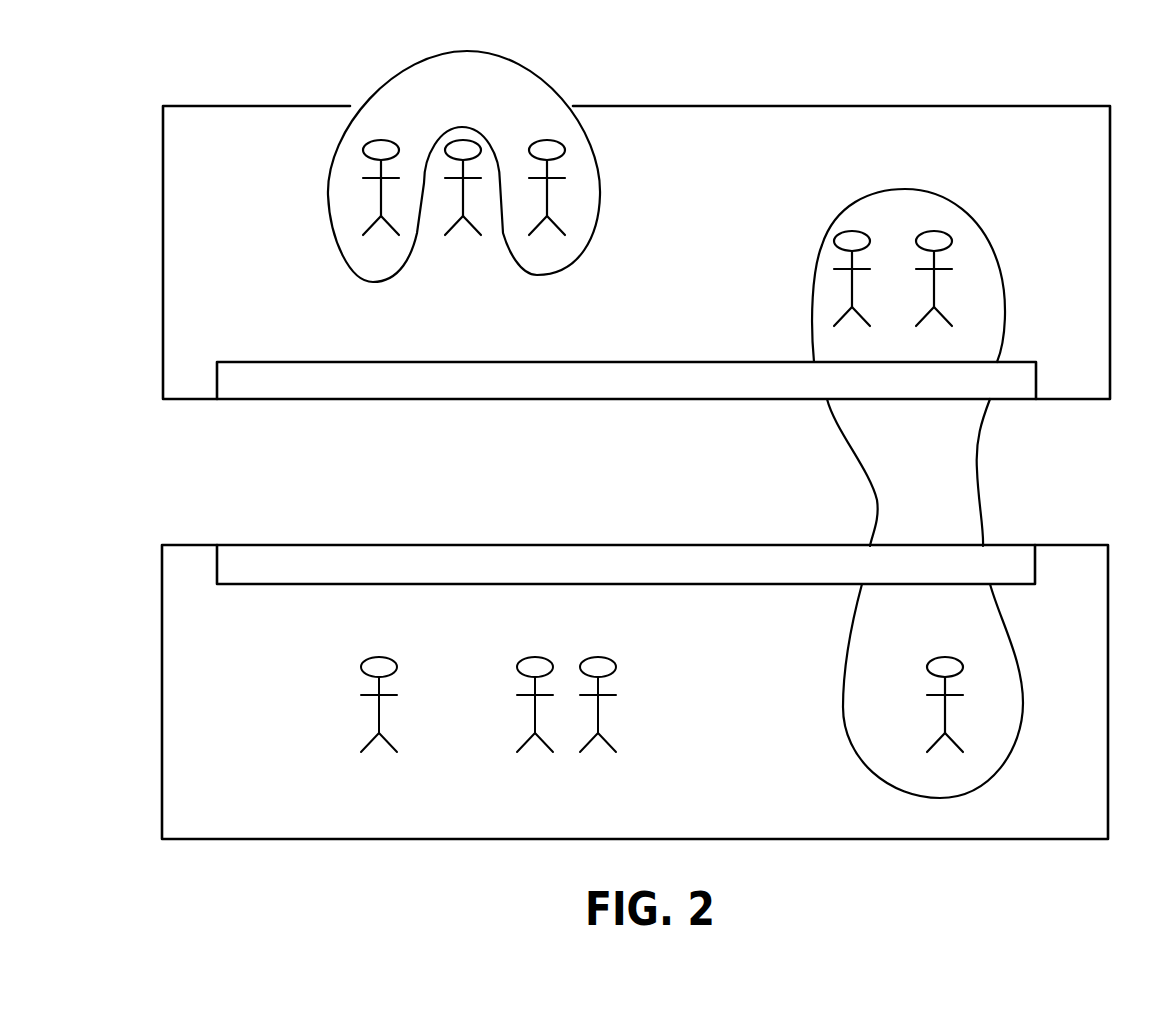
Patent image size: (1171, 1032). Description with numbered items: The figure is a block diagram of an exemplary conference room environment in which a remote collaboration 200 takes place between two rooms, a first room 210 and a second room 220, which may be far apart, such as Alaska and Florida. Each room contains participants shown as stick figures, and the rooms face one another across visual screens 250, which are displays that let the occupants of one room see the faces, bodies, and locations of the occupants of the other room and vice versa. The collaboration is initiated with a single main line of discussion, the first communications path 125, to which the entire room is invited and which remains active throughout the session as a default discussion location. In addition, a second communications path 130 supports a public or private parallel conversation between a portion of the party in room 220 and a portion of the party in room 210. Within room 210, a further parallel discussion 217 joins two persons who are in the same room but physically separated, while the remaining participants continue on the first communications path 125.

The remote collaboration 200 is at (634, 36).
The room 210 is at (205, 160).
The room 220 is at (203, 804).
The parallel discussion 217 is at (443, 98).
The first communications path 125 is at (498, 476).
The second communications path 130 is at (896, 476).
The visual screens 250 is at (282, 411).